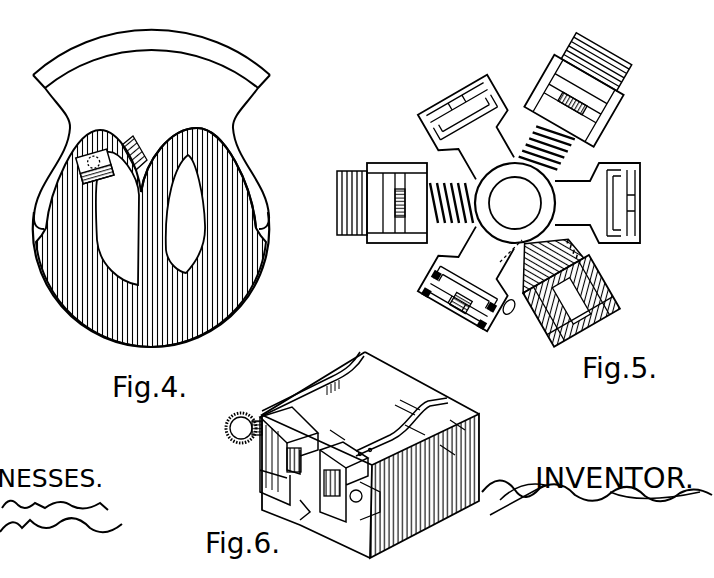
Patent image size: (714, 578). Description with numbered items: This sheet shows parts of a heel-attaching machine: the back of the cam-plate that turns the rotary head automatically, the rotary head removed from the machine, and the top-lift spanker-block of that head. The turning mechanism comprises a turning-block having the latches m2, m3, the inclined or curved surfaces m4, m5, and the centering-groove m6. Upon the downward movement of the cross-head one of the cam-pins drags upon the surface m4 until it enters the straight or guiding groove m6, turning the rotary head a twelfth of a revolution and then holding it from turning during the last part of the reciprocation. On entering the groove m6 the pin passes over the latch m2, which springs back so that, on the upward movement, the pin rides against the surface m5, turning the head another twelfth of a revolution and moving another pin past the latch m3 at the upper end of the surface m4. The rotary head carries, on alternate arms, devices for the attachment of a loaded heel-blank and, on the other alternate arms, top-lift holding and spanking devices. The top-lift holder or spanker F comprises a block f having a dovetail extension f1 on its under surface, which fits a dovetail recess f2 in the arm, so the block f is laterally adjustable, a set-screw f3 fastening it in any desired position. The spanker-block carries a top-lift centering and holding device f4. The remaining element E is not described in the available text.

In FIG. 4, the latch m2 is at (144, 160).
In FIG. 4, the latch m3 is at (102, 176).
In FIG. 4, the inclined or curved surface m4 is at (103, 143).
In FIG. 4, the inclined or curved surface m5 is at (153, 171).
In FIG. 4, the centering-groove m6 is at (156, 213).
In FIG. 5, the electromagnet E is at (404, 158).
In FIG. 5, the top-lift holder or spanker F is at (519, 203).
In FIG. 6, the top-lift holder or spanker F is at (442, 490).
In FIG. 6, the block f is at (363, 482).
In FIG. 5, the dovetail extension f1 is at (455, 315).
In FIG. 6, the dovetail extension f1 is at (330, 530).
In FIG. 5, the dovetail recess f2 is at (502, 262).
In FIG. 5, the set-screw f3 is at (515, 316).
In FIG. 6, the top-lift centering and holding device f4 is at (312, 392).